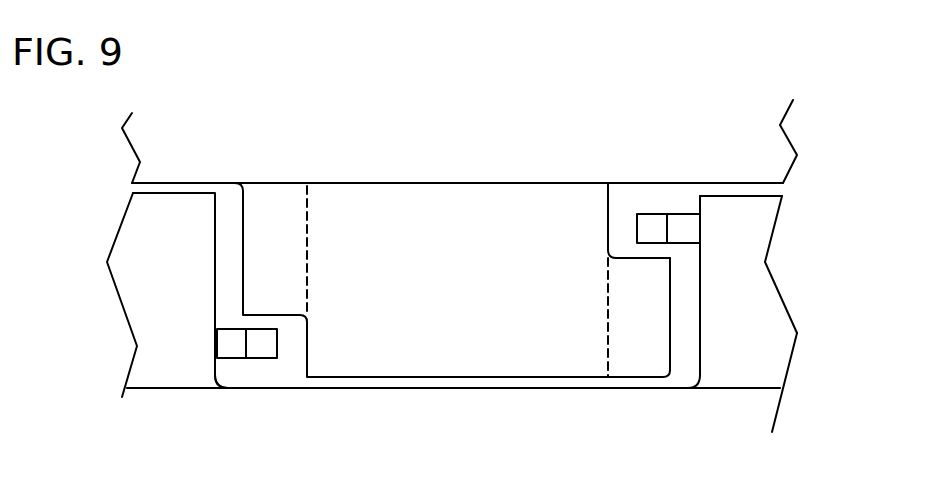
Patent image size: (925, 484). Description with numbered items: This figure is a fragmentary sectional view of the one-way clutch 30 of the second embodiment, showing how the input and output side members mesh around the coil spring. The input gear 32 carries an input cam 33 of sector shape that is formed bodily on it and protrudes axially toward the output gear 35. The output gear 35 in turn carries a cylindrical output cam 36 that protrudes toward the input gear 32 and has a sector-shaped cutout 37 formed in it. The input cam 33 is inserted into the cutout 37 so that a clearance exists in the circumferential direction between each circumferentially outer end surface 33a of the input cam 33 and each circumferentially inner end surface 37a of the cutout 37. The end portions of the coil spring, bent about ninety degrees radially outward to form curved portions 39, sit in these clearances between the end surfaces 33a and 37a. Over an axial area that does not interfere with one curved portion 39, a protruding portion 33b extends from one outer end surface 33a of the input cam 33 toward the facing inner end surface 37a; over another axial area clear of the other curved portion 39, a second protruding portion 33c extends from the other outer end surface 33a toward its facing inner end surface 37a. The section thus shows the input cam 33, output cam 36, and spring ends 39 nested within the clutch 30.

The one-way clutch 30 is at (803, 213).
The input gear 32 is at (777, 138).
The input cam 33 is at (470, 360).
The circumferentially outer end surface 33a is at (297, 367).
The protruding portion 33b is at (657, 327).
The protruding portion 33c is at (253, 235).
The output gear 35 is at (762, 412).
The output cam 36 is at (132, 288).
The cutout 37 is at (698, 353).
The circumferentially inner end surface 37a is at (216, 267).
The curved portion 39 is at (260, 350).